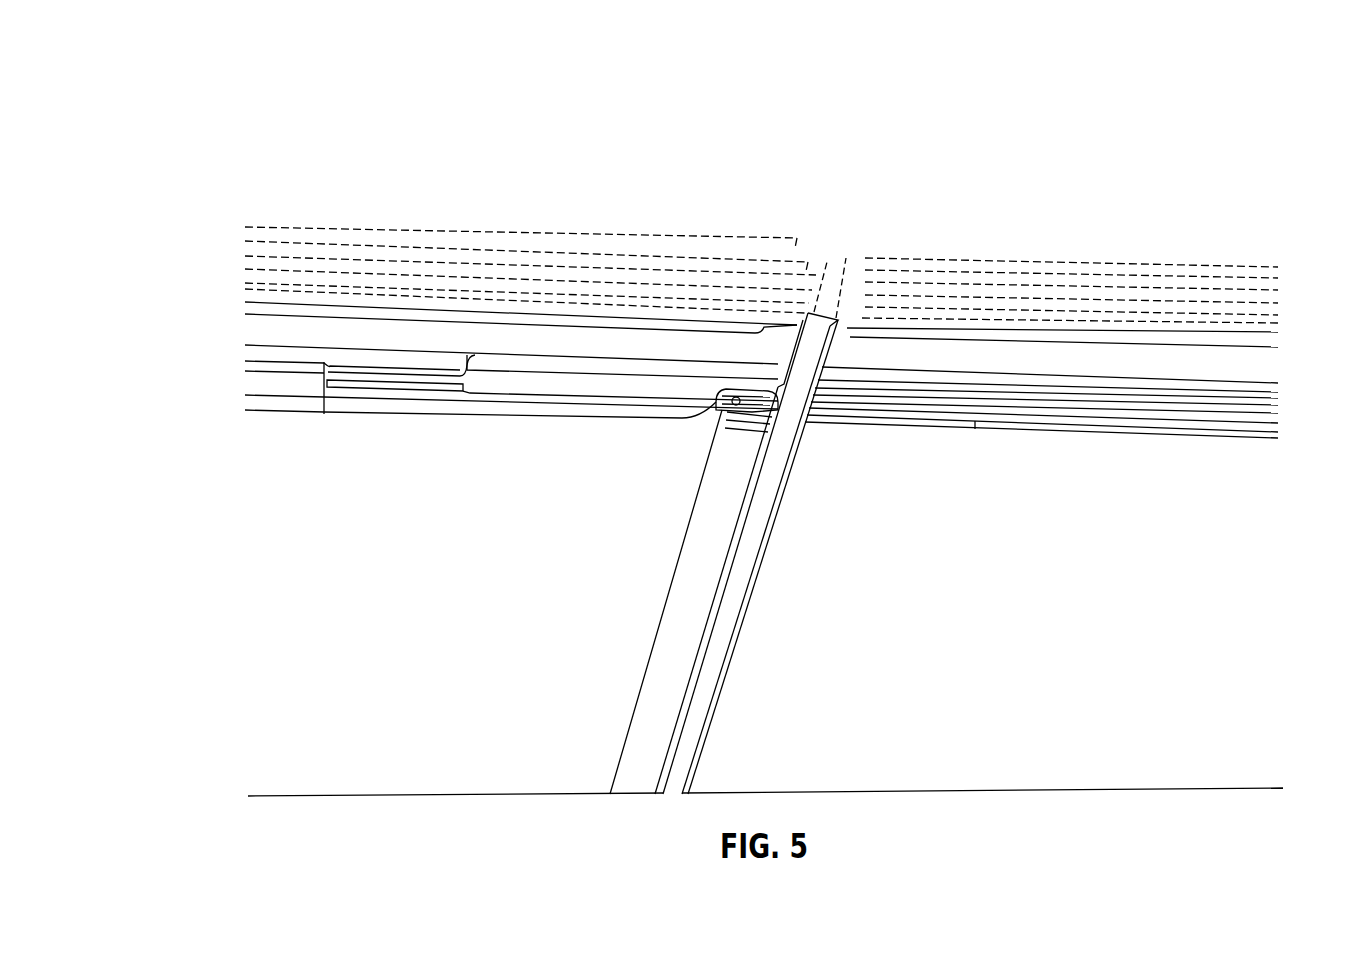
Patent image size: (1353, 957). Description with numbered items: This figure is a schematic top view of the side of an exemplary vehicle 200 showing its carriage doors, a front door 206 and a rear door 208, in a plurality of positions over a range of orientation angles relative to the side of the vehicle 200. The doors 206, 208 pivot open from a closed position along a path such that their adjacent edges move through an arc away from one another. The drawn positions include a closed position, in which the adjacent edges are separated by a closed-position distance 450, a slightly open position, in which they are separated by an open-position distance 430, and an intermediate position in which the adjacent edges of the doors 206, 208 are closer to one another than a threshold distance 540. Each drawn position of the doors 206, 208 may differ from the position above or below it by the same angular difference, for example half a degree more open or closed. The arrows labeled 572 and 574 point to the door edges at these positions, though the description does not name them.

The vehicle 200 is at (206, 98).
The front door 206 is at (545, 470).
The rear door 208 is at (875, 495).
The open-position distance 430 is at (834, 257).
The closed-position distance 450 is at (838, 324).
The threshold distance 540 is at (852, 313).
The first panel edge 572 is at (780, 310).
The second panel edge 574 is at (878, 246).